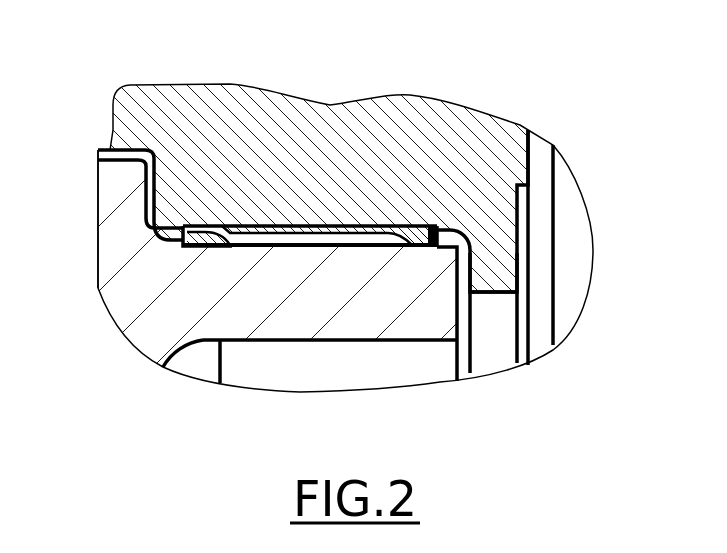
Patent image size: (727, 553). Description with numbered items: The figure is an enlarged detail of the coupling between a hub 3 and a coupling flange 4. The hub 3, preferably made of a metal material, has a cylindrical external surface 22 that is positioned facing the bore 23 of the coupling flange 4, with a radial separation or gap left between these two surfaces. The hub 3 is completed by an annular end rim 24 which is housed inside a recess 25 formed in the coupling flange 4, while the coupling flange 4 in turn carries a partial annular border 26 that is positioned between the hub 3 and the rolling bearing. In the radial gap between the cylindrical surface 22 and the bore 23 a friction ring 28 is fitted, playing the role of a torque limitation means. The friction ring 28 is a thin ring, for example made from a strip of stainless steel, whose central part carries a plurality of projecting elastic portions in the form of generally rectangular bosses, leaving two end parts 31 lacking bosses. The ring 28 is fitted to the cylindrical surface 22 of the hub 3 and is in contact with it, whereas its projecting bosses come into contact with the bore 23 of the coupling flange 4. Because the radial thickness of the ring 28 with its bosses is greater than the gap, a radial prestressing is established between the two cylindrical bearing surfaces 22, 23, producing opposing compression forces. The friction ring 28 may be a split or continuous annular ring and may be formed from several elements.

The hub 3 is at (138, 324).
The coupling flange 4 is at (247, 84).
The cylindrical external surface 22 is at (312, 248).
The bore 23 is at (422, 226).
The annular end rim 24 is at (113, 176).
The recess 25 is at (144, 152).
The partial annular border 26 is at (502, 280).
The friction ring 28 is at (327, 220).
The end parts 31 is at (205, 242).